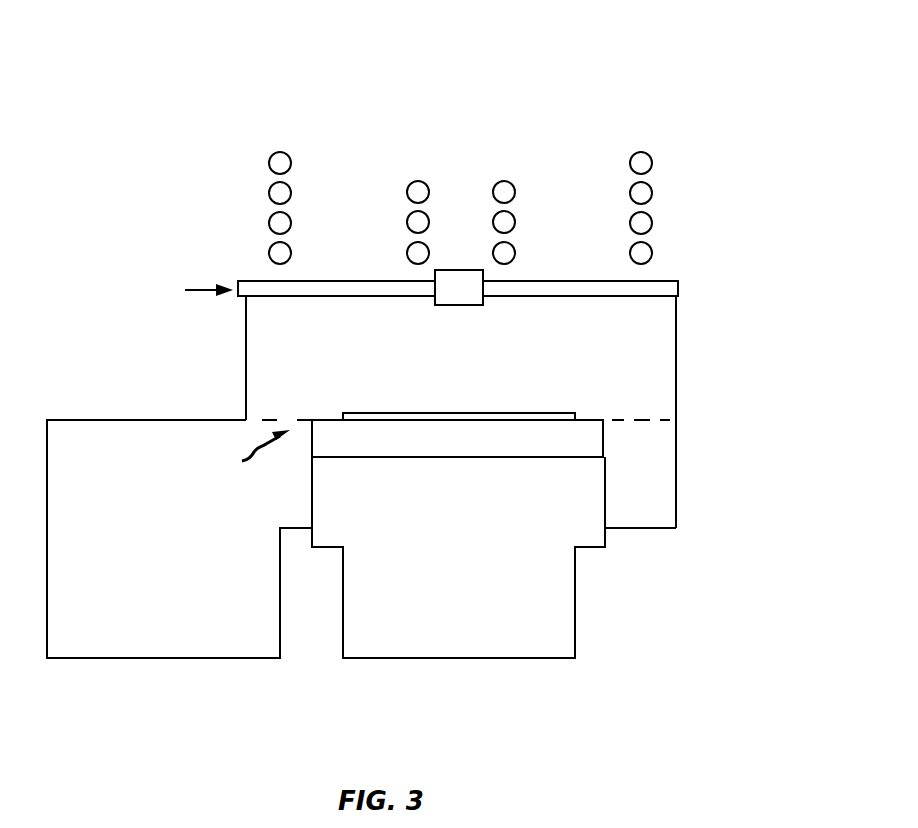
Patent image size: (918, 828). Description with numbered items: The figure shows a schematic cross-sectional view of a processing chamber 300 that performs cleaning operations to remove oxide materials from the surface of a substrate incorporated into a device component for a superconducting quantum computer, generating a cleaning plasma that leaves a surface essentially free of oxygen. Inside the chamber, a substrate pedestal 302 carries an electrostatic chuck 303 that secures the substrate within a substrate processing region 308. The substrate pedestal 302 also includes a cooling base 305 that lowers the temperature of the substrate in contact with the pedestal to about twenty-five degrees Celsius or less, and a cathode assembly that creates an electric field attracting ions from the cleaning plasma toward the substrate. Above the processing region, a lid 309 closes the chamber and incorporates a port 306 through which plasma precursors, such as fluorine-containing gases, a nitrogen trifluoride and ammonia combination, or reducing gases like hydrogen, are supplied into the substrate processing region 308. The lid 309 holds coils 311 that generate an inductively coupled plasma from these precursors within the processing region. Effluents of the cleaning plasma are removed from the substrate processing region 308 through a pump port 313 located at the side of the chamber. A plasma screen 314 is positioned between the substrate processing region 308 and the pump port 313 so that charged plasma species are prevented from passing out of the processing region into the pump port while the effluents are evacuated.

The processing chamber 300 is at (108, 77).
The substrate pedestal 302 is at (588, 510).
The electrostatic chuck 303 is at (518, 418).
The cooling base 305 is at (588, 445).
The port 306 is at (481, 288).
The substrate processing region 308 is at (477, 382).
The lid 309 is at (678, 296).
The coils 311 is at (690, 219).
The pump port 313 is at (177, 532).
The plasma screen 314 is at (280, 425).